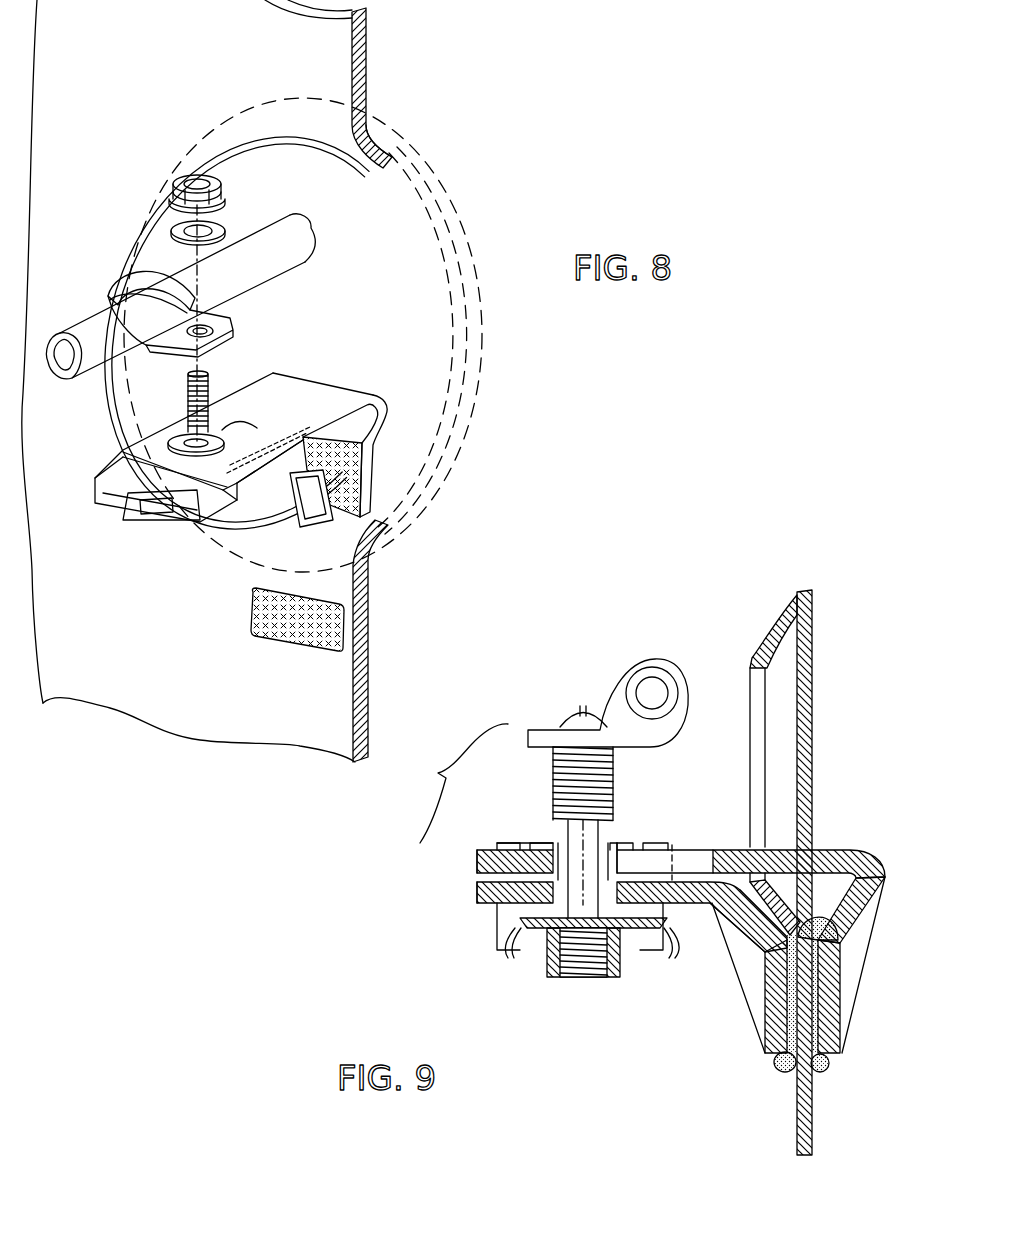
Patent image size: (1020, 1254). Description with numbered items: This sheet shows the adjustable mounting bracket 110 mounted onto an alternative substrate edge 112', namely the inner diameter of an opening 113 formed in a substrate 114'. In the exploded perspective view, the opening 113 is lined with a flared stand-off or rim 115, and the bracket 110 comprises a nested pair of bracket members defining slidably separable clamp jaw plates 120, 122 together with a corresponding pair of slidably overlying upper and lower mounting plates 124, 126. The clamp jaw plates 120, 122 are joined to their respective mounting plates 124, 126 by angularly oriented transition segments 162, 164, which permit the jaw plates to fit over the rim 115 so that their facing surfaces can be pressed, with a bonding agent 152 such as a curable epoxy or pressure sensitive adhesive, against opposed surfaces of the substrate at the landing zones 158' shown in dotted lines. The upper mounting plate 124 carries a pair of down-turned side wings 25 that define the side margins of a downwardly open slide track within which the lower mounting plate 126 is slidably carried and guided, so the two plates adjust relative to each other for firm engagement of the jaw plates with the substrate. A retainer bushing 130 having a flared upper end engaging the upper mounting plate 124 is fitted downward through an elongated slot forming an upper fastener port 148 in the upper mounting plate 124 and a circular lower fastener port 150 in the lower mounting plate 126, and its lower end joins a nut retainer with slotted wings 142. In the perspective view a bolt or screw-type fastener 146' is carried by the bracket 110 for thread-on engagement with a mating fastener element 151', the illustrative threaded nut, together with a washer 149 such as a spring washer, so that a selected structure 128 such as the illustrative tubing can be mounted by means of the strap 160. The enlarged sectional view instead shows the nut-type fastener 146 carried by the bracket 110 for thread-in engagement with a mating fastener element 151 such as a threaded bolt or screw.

In FIG. 8, the adjustable mounting bracket 110 is at (343, 382).
In FIG. 9, the adjustable mounting bracket 110 is at (627, 1042).
In FIG. 8, the alternative substrate edge 112' is at (403, 641).
In FIG. 9, the alternative substrate edge 112' is at (756, 872).
In FIG. 8, the opening 113 is at (327, 145).
In FIG. 9, the opening 113 is at (750, 665).
In FIG. 8, the substrate 114' is at (394, 88).
In FIG. 8, the flared stand-off or rim 115 is at (365, 157).
In FIG. 9, the flared stand-off or rim 115 is at (767, 650).
In FIG. 8, the clamp jaw plate 120 is at (372, 475).
In FIG. 9, the clamp jaw plate 120 is at (840, 1023).
In FIG. 8, the clamp jaw plate 122 is at (307, 527).
In FIG. 9, the clamp jaw plate 122 is at (765, 1023).
In FIG. 8, the upper mounting plate 124 is at (283, 380).
In FIG. 9, the upper mounting plate 124 is at (780, 847).
In FIG. 8, the lower mounting plate 126 is at (123, 472).
In FIG. 9, the lower mounting plate 126 is at (478, 900).
In FIG. 8, the selected structure 128 is at (285, 258).
In FIG. 8, the retainer bushing 130 is at (227, 448).
In FIG. 9, the retainer bushing 130 is at (540, 843).
In FIG. 8, the slotted wings 142 is at (147, 527).
In FIG. 9, the fastener 146 is at (581, 969).
In FIG. 8, the bolt or screw-type fastener 146' is at (232, 388).
In FIG. 9, the upper fastener port 148 is at (640, 843).
In FIG. 8, the washer 149 is at (225, 228).
In FIG. 9, the lower fastener port 150 is at (567, 873).
In FIG. 9, the mating fastener element 151 is at (614, 812).
In FIG. 8, the mating fastener element 151' is at (236, 187).
In FIG. 9, the bonding agent 152 is at (827, 1073).
In FIG. 8, the landing zones 158' is at (288, 630).
In FIG. 8, the strap 160 is at (148, 293).
In FIG. 8, the transition segment 162 is at (386, 420).
In FIG. 9, the transition segment 162 is at (867, 917).
In FIG. 8, the transition segment 164 is at (293, 482).
In FIG. 9, the transition segment 164 is at (745, 928).
In FIG. 8, the down-turned side wings 25 is at (253, 493).